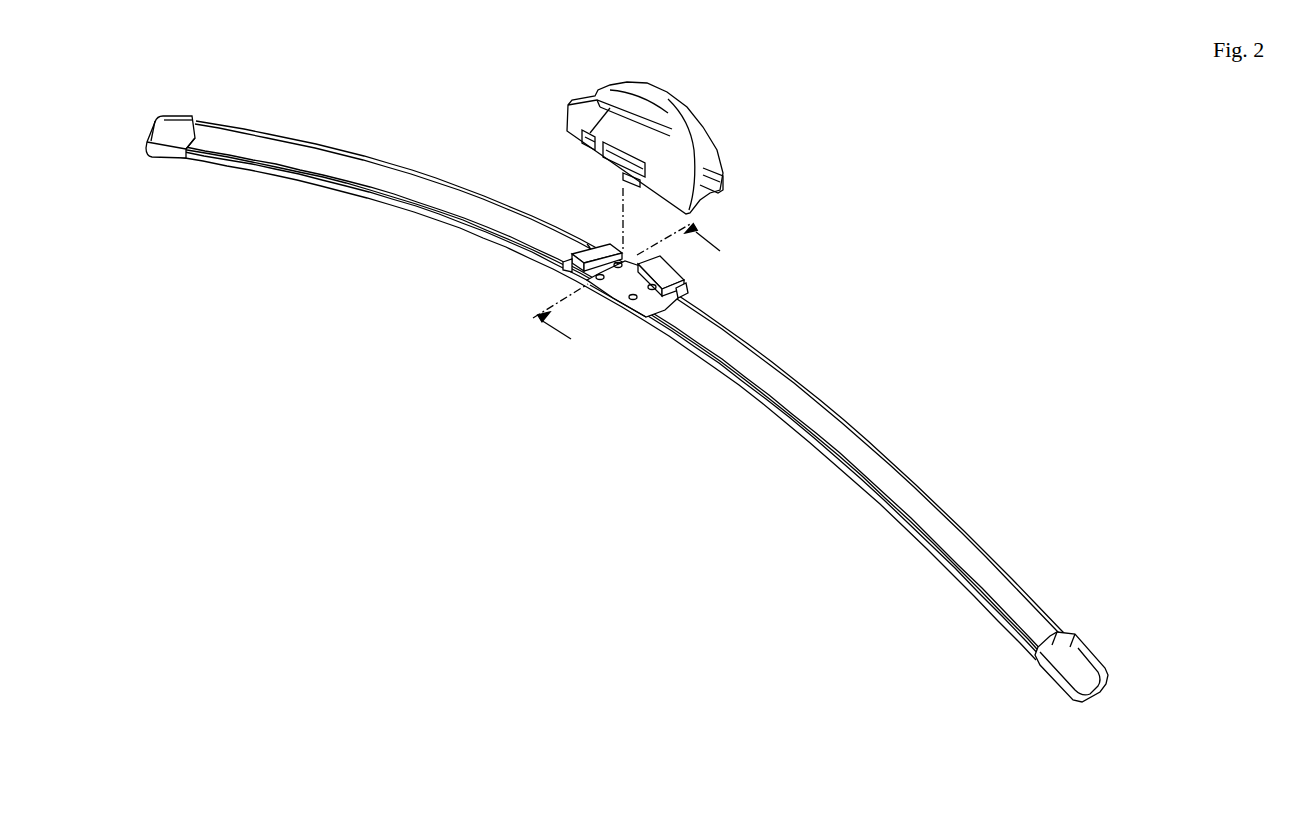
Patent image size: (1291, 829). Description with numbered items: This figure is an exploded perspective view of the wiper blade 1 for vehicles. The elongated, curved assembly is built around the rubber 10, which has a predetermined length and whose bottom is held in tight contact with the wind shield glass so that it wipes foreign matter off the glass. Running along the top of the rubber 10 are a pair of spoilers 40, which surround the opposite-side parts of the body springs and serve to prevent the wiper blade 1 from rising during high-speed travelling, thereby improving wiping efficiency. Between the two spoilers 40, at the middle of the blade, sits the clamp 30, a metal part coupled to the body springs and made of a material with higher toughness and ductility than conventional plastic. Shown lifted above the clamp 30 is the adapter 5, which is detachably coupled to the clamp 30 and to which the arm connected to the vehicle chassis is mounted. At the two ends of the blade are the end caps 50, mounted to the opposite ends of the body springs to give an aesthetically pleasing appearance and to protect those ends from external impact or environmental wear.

The wiper blade 1 is at (888, 216).
The adapter 5 is at (668, 122).
The rubber 10 is at (297, 182).
The clamp 30 is at (614, 289).
The spoilers 40 is at (287, 152).
The end caps 50 is at (168, 135).